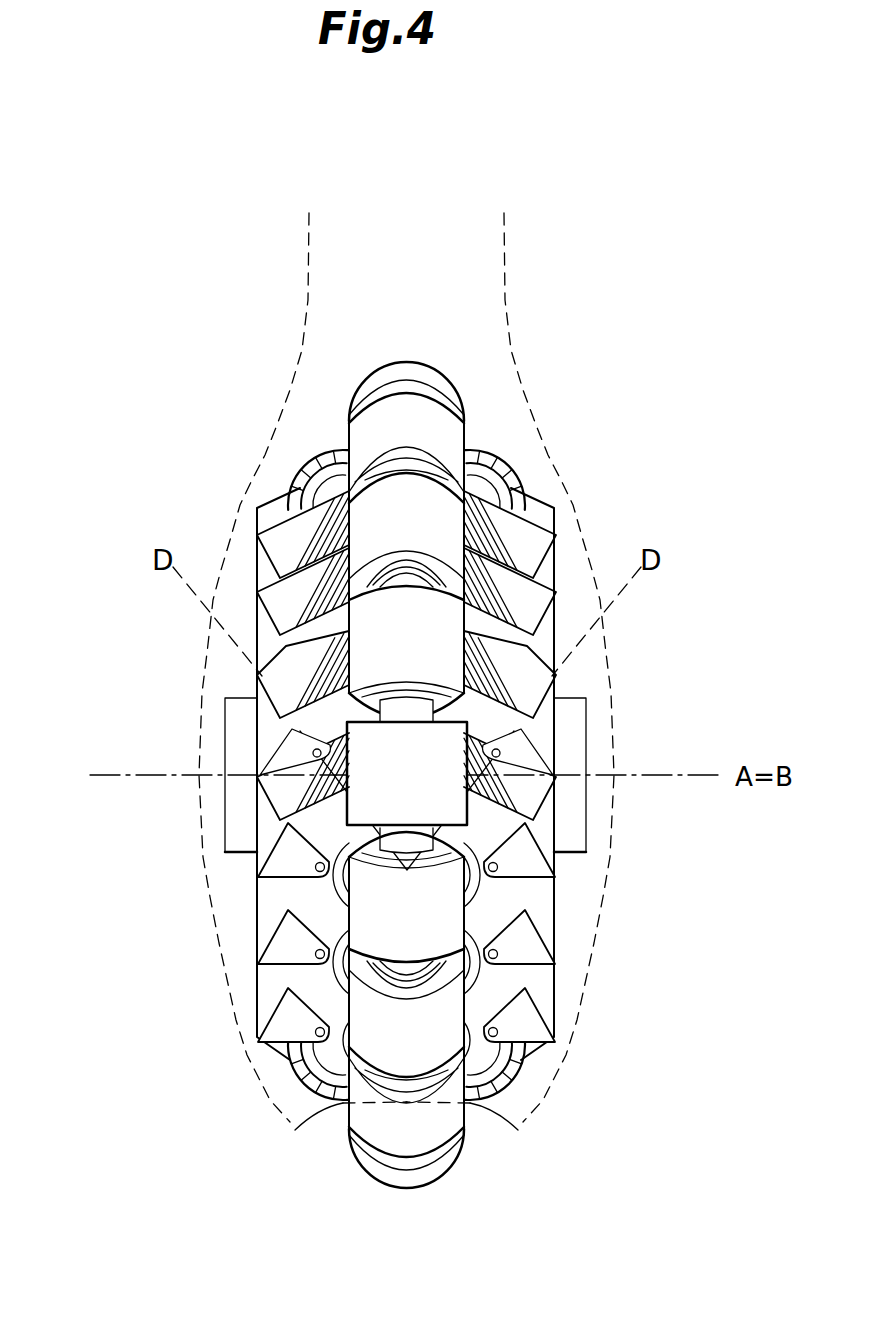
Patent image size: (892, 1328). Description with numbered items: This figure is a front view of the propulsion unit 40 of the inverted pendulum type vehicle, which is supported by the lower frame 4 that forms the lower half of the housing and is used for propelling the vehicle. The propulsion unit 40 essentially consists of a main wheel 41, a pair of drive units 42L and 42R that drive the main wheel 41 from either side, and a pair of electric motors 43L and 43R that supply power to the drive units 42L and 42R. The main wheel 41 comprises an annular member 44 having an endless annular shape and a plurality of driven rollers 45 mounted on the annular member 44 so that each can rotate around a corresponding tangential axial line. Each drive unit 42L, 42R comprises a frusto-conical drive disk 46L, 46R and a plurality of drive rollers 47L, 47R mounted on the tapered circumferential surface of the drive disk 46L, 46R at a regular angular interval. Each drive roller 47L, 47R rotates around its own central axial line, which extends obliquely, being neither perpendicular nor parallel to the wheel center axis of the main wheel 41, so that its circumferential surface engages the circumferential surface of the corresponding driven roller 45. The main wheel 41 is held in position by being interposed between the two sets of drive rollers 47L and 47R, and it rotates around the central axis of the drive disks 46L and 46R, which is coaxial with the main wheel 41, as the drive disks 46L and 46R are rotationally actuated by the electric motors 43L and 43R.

The lower frame 4 is at (503, 275).
The propulsion unit 40 is at (362, 305).
The main wheel 41 is at (472, 380).
The drive unit 42R is at (250, 542).
The drive unit 42L is at (564, 542).
The electric motor 43R is at (230, 843).
The electric motor 43L is at (577, 852).
The annular member 44 is at (470, 720).
The driven roller 45 is at (417, 1057).
The drive disk 46R is at (272, 740).
The drive disk 46L is at (542, 740).
The drive roller 47R is at (292, 478).
The drive roller 47L is at (522, 478).